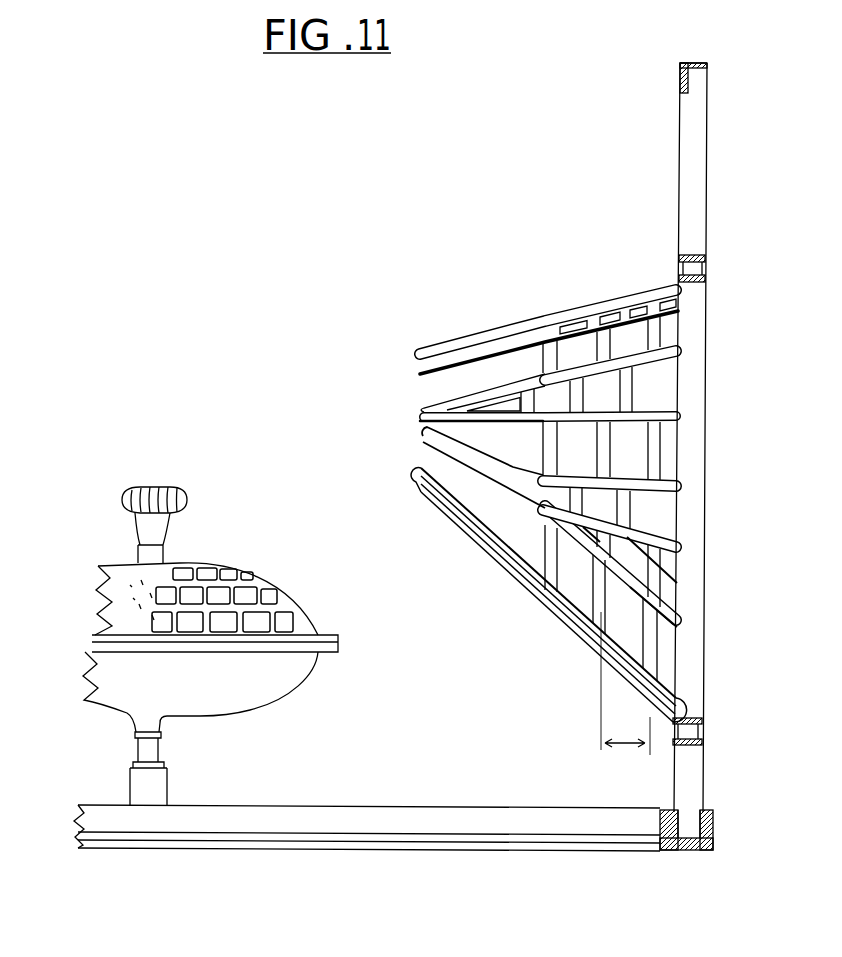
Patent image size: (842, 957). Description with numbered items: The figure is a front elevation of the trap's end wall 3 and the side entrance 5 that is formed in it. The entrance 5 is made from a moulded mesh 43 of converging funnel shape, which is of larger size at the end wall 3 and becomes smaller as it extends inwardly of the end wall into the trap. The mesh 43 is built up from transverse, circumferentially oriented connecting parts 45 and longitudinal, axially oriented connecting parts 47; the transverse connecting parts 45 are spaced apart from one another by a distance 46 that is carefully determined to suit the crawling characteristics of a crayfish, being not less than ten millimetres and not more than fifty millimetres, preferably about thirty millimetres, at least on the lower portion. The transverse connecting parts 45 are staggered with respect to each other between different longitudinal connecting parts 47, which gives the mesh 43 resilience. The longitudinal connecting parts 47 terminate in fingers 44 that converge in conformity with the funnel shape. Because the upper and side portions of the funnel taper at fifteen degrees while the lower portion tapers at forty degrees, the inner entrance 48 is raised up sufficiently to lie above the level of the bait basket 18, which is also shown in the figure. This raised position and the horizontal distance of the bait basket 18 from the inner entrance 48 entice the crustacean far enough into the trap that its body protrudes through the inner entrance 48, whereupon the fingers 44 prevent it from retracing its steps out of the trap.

The end wall 3 is at (722, 200).
The side entrance 5 is at (550, 511).
The bait basket 18 is at (220, 598).
The moulded mesh 43 is at (600, 320).
The fingers 44 is at (423, 466).
The transverse connecting parts 45 is at (600, 462).
The distance 46 is at (634, 752).
The longitudinal connecting parts 47 is at (600, 550).
The inner entrance 48 is at (416, 352).